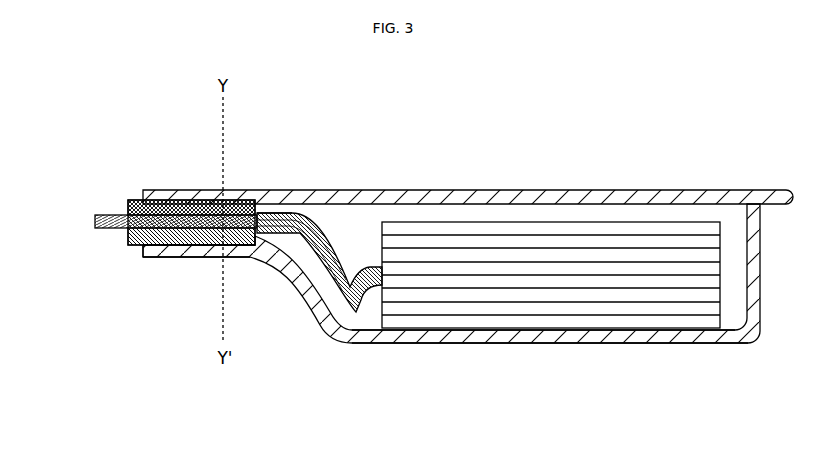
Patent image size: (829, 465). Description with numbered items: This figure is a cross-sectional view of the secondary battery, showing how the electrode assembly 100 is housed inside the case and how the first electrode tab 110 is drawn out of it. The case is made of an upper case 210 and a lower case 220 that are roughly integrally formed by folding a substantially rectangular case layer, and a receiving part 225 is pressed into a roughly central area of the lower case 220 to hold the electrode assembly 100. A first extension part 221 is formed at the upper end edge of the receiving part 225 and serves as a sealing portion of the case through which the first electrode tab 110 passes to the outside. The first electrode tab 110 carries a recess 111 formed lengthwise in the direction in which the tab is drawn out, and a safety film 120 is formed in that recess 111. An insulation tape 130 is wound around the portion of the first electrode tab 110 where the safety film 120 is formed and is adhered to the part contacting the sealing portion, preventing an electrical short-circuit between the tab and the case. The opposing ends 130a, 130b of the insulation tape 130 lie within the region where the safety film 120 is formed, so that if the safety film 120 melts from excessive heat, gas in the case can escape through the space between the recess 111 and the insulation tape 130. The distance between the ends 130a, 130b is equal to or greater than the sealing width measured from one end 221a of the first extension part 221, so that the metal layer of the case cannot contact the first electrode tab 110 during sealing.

The electrode assembly 100 is at (652, 290).
The first electrode tab 110 is at (314, 221).
The recess 111 is at (274, 205).
The safety film 120 is at (123, 212).
The insulation tape 130 is at (153, 223).
The one end of insulation tape 130a is at (120, 238).
The other end of insulation tape 130b is at (270, 258).
The upper case 210 is at (508, 190).
The lower case 220 is at (415, 318).
The first extension part 221 is at (162, 287).
The one end of first extension part 221a is at (142, 253).
The receiving part 225 is at (450, 344).